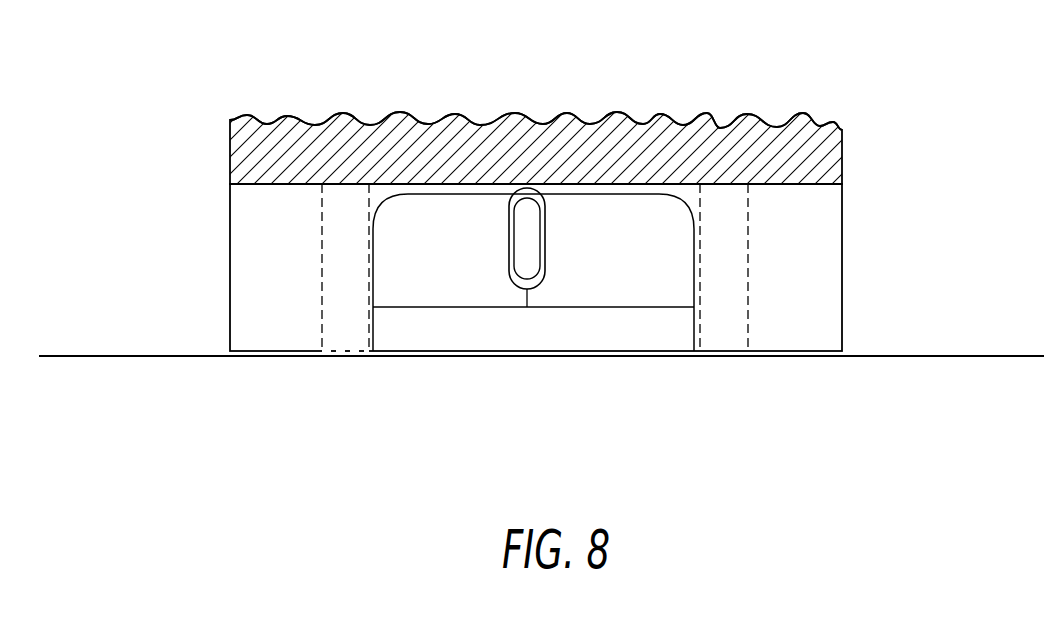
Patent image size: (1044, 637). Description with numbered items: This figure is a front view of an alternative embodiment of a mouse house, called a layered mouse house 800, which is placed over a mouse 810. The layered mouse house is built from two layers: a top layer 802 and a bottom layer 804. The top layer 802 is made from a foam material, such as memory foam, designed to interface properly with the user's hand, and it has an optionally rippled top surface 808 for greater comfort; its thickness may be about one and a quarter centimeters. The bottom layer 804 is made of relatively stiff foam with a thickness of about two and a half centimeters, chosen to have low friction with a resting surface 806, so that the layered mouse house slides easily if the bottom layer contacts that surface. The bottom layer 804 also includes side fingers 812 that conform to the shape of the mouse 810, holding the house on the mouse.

The layered mouse house 800 is at (522, 103).
The top layer 802 is at (842, 154).
The bottom layer 804 is at (842, 239).
The resting surface 806 is at (947, 356).
The rippled top surface 808 is at (790, 114).
The mouse 810 is at (531, 330).
The side fingers 812 is at (731, 313).